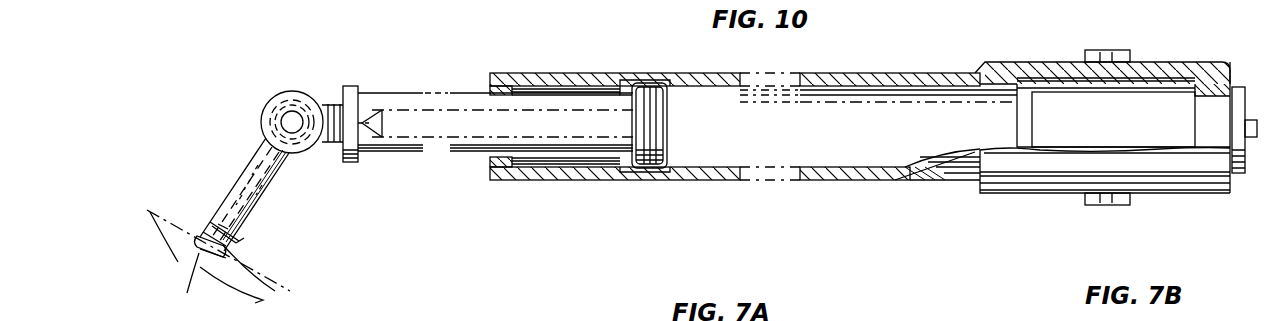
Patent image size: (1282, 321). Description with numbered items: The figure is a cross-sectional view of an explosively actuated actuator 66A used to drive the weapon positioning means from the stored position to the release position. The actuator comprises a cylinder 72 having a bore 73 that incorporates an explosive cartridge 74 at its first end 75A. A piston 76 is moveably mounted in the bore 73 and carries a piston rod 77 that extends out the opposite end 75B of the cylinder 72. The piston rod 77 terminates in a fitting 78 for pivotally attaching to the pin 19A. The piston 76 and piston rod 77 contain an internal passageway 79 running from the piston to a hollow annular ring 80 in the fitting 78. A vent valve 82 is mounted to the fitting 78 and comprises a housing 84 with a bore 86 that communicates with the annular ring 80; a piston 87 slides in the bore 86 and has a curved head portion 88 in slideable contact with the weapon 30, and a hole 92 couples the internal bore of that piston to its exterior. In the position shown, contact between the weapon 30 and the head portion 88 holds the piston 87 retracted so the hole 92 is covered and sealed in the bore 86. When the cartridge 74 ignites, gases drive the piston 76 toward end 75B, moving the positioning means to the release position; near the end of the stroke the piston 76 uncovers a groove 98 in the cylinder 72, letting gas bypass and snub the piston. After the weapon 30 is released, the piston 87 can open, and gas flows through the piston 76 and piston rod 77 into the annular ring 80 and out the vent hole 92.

The fitting 78 is at (292, 92).
The pin 19A is at (289, 122).
The hollow annular ring 80 is at (305, 160).
The internal passageway 79 is at (407, 128).
The piston rod 77 is at (460, 147).
The end of the cylinder 75B is at (525, 176).
The piston 76 is at (655, 164).
The groove 98 is at (626, 95).
The actuator 66A is at (905, 76).
The explosive cartridge 74 is at (1124, 140).
The bore 73 is at (815, 164).
The cylinder 72 is at (842, 182).
The first end 75A is at (1060, 184).
The housing 84 is at (219, 205).
The bore 86 is at (238, 177).
The vent valve 82 is at (258, 224).
The hole 92 is at (248, 236).
The piston 87 is at (222, 250).
The weapon 30 is at (293, 298).
The curved head portion 88 is at (190, 292).